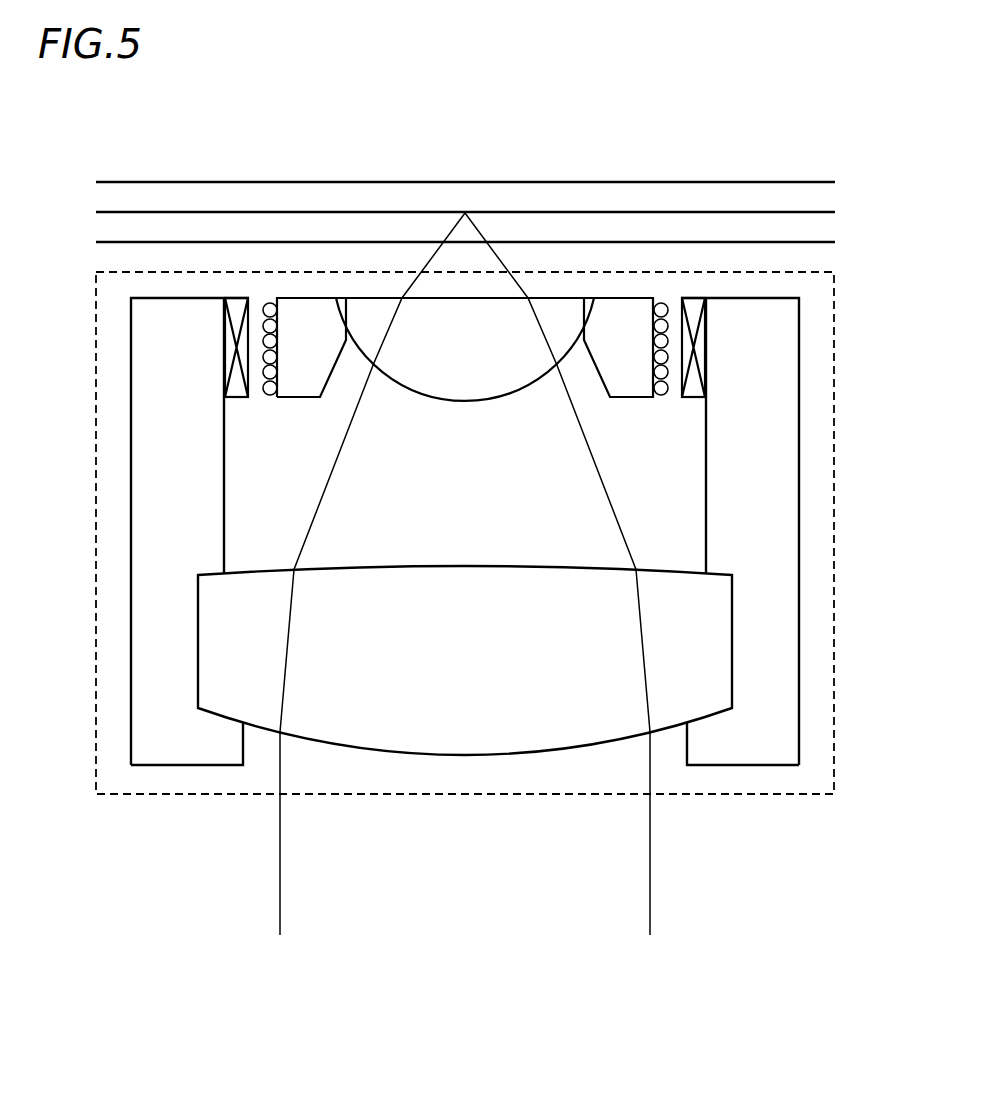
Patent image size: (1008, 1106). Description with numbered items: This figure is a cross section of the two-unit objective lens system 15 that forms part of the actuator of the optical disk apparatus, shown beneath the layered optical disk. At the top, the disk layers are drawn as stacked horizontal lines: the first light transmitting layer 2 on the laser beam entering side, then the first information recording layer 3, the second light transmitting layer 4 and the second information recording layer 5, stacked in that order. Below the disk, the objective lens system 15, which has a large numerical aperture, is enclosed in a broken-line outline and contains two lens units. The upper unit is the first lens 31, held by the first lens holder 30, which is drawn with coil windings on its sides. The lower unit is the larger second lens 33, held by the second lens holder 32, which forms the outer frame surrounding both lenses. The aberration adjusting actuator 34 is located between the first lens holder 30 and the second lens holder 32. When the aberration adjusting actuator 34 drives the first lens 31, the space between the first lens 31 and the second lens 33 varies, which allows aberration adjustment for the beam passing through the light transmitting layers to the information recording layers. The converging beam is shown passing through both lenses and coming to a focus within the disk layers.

The first light transmitting layer 2 is at (775, 232).
The first information recording layer 3 is at (715, 182).
The second light transmitting layer 4 is at (653, 198).
The second information recording layer 5 is at (582, 182).
The objective lens system 15 is at (834, 757).
The first lens holder 30 is at (633, 378).
The first lens 31 is at (465, 380).
The second lens holder 32 is at (180, 742).
The second lens 33 is at (485, 717).
The aberration adjusting actuator 34 is at (237, 398).